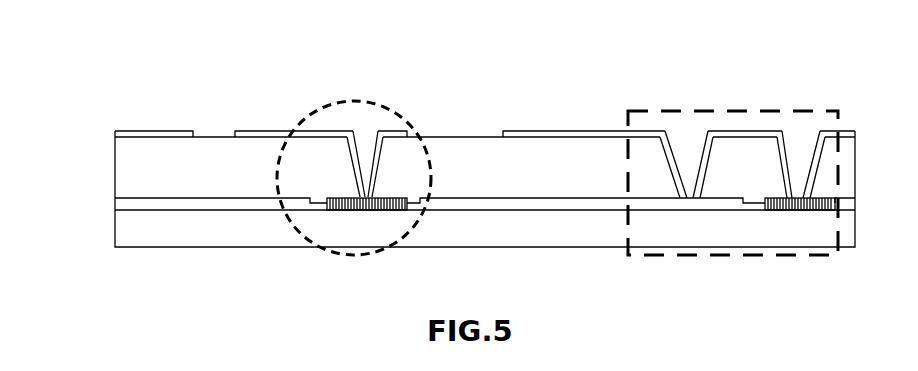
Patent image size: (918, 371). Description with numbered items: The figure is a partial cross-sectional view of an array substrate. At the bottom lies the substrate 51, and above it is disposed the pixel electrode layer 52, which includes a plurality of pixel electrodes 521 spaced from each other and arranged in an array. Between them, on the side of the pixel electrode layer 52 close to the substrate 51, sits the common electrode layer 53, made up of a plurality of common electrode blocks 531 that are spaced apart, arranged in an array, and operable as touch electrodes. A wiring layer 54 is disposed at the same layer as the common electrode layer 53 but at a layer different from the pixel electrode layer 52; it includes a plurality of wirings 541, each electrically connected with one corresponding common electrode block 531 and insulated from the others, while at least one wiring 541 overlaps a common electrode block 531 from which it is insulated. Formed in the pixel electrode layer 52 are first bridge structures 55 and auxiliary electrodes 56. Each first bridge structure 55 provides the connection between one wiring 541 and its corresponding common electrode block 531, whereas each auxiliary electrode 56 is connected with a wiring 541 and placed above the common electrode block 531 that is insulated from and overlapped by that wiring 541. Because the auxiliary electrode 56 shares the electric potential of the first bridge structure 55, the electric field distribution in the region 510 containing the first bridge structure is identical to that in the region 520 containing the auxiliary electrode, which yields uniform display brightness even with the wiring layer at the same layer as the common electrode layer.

The substrate 51 is at (133, 230).
The pixel electrode layer 52 is at (448, 120).
The pixel electrode 521 is at (170, 131).
The common electrode layer 53 is at (485, 243).
The common electrode block 531 is at (255, 210).
The wiring layer 54 is at (543, 239).
The wiring 541 is at (375, 203).
The first bridge structure 55 is at (837, 130).
The auxiliary electrode 56 is at (332, 128).
The region with the first bridge structure 510 is at (630, 108).
The region with the auxiliary electrode 520 is at (378, 105).